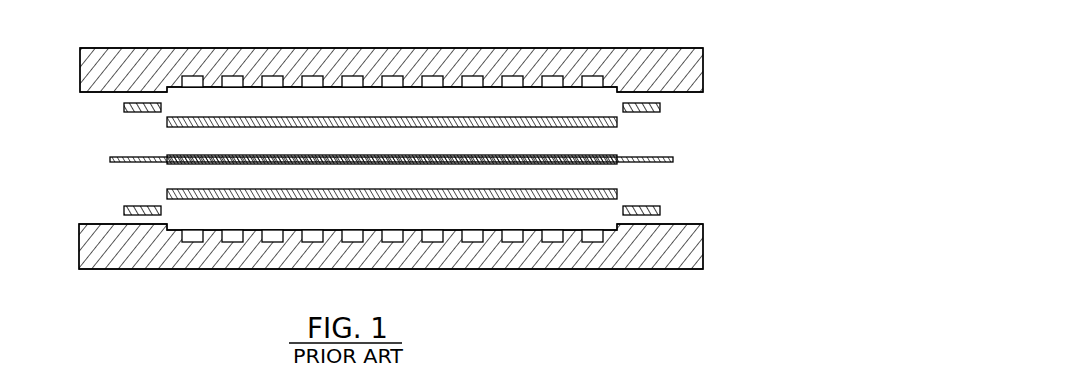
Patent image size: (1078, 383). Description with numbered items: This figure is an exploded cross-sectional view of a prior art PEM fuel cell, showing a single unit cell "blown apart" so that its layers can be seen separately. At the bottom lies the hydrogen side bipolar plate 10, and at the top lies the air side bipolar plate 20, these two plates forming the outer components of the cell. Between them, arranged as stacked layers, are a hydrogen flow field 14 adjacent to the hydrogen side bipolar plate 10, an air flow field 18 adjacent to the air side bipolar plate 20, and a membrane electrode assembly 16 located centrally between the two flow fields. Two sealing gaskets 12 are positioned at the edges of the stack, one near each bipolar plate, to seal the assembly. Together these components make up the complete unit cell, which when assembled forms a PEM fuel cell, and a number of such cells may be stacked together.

The hydrogen side bipolar plate 10 is at (365, 246).
The sealing gaskets 12 is at (344, 153).
The hydrogen flow field 14 is at (442, 183).
The membrane electrode assembly (MEA) 16 is at (431, 154).
The air flow field 18 is at (440, 116).
The air side bipolar plate 20 is at (418, 70).